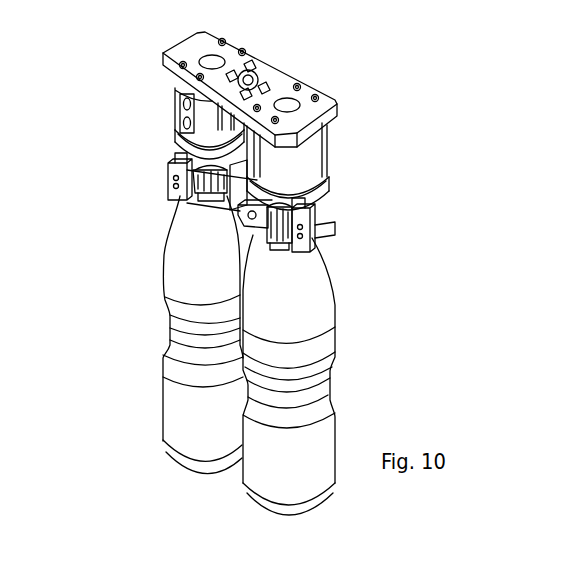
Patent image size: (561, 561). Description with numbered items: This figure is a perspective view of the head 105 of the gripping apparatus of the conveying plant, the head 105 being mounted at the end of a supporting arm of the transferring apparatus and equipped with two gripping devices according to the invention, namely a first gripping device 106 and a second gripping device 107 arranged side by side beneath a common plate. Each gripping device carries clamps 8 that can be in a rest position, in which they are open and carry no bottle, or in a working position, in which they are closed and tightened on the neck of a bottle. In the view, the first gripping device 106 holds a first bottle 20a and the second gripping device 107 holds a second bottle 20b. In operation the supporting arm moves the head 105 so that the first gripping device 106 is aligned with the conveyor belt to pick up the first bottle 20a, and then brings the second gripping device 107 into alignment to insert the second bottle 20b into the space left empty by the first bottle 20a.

The head 105 is at (305, 52).
The first gripping device 106 is at (170, 115).
The second gripping device 107 is at (328, 157).
The clamps 8 is at (210, 196).
The first bottle 20a is at (170, 225).
The second bottle 20b is at (338, 298).